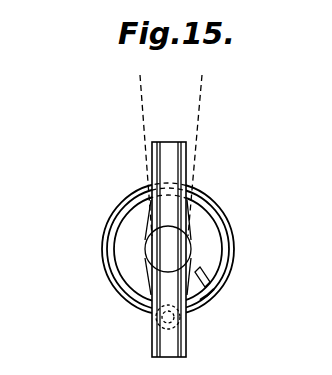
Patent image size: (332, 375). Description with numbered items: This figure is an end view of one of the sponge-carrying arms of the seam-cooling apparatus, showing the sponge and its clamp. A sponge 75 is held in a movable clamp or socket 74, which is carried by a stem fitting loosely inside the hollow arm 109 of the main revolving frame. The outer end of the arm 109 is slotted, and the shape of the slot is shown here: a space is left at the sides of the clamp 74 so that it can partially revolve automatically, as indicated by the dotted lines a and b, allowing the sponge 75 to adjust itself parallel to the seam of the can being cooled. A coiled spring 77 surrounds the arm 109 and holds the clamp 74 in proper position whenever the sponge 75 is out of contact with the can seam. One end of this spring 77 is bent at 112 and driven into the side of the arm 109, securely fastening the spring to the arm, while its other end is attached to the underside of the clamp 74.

The dotted line a is at (136, 155).
The dotted line b is at (201, 155).
The movable clamp 74 is at (152, 333).
The sponge 75 is at (169, 346).
The hollow arm 109 is at (122, 240).
The coiled spring 77 is at (217, 289).
The bent end of spring 112 is at (215, 283).